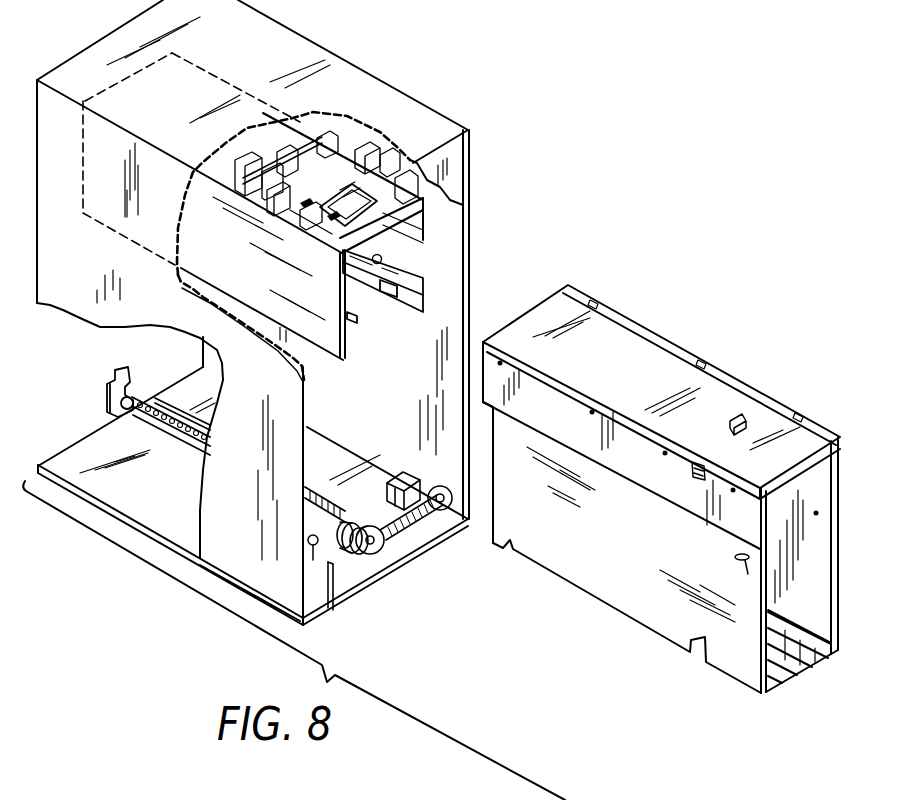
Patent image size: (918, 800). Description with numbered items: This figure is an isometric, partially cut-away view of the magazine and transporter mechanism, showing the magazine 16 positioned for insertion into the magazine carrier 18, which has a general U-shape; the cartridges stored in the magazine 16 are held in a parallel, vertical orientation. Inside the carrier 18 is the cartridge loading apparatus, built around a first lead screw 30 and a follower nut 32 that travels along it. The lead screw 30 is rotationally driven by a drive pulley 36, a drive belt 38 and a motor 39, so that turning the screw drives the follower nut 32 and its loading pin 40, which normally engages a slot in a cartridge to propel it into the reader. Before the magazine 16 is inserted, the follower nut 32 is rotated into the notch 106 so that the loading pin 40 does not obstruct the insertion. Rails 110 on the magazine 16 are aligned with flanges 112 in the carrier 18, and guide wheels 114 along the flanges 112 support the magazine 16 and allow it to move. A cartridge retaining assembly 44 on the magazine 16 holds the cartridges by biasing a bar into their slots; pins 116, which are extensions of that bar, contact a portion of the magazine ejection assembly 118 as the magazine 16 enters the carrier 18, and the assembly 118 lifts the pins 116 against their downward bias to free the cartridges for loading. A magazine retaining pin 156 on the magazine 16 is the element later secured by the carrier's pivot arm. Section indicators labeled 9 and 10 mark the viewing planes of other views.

The housing 10 is at (52, 0).
The magazine 16 is at (658, 340).
The magazine carrier 18 is at (428, 218).
The first lead screw 30 is at (330, 505).
The follower nut 32 is at (310, 555).
The drive pulley 36 is at (377, 548).
The drive belt 38 is at (421, 528).
The motor 39 is at (407, 471).
The loading pin 40 is at (334, 528).
The cartridge retaining assembly 44 is at (727, 422).
The notch 106 is at (328, 572).
The rails 110 is at (523, 421).
The flanges 112 is at (426, 299).
The guide wheels 114 is at (350, 314).
The pins 116 is at (695, 482).
The magazine ejection assembly 118 is at (412, 121).
The magazine retaining pin 156 is at (748, 563).
The section line for FIG. 9 is at (860, 416).